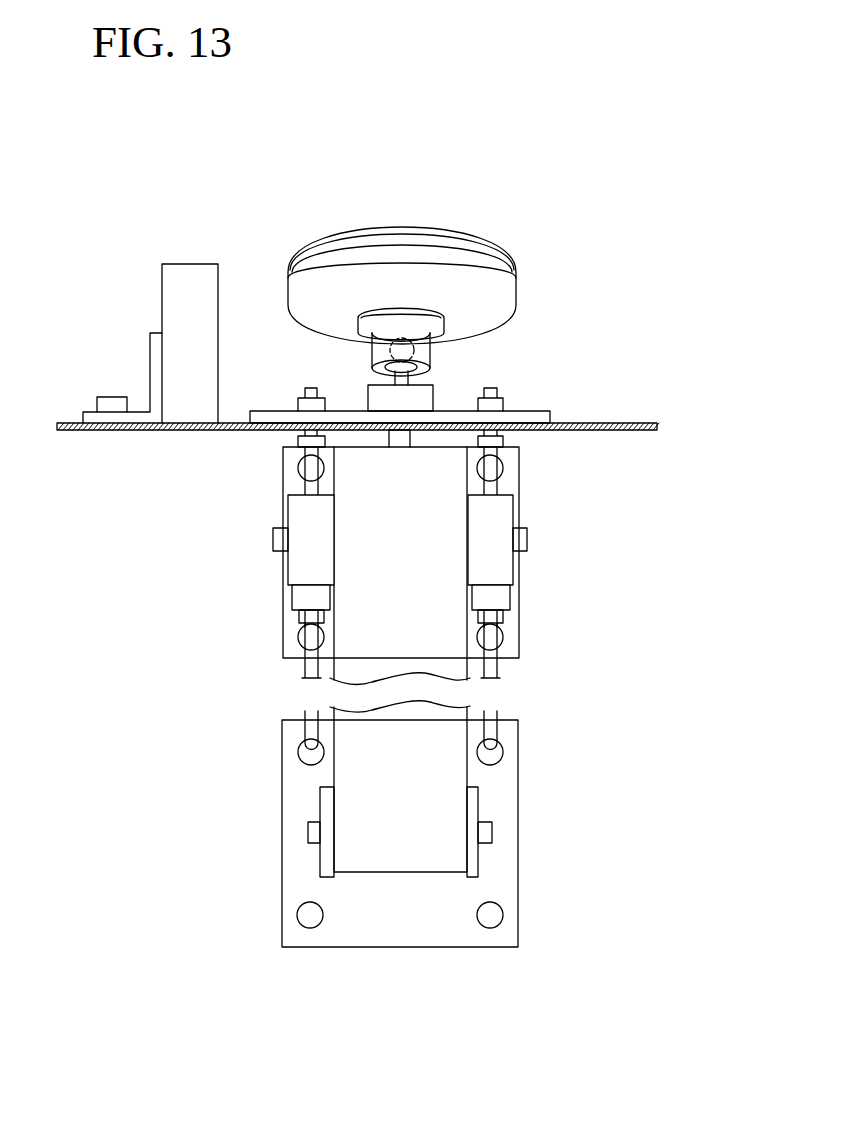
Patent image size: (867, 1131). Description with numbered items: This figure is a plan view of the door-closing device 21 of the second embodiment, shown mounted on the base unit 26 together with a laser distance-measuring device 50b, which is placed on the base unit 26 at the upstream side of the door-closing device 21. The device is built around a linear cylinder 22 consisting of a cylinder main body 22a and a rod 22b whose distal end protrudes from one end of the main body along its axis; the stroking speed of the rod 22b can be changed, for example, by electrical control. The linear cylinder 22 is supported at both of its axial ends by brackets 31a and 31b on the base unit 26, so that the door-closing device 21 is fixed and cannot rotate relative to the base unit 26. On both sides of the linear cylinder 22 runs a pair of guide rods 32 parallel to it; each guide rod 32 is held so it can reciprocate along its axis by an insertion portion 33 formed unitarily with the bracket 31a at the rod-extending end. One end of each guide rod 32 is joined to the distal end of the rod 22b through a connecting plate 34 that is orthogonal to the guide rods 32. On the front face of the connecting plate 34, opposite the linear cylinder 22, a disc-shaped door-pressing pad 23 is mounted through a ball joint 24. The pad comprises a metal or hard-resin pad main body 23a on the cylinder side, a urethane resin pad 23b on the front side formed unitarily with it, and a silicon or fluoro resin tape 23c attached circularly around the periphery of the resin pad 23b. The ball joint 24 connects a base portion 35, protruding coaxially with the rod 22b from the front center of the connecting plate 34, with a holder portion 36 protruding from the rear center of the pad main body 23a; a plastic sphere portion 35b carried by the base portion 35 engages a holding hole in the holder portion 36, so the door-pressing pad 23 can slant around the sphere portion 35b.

The door-closing device 21 is at (597, 543).
The linear cylinder 22 is at (453, 688).
The cylinder main body 22a is at (452, 778).
The rod 22b is at (403, 435).
The door-pressing pad 23 is at (457, 243).
The pad main body 23a is at (468, 260).
The resin pad 23b is at (434, 238).
The silicon or fluoro resin tape 23c is at (398, 228).
The ball joint 24 is at (444, 345).
The base unit 26 is at (641, 427).
The bracket 31a is at (300, 564).
The bracket 31b is at (325, 800).
The guide rod 32 is at (300, 668).
The insertion portion 33 is at (304, 598).
The connecting plate 34 is at (540, 418).
The base portion 35 is at (410, 384).
The sphere portion 35b is at (389, 350).
The holder portion 36 is at (420, 346).
The laser distance-measuring device 50b is at (185, 312).